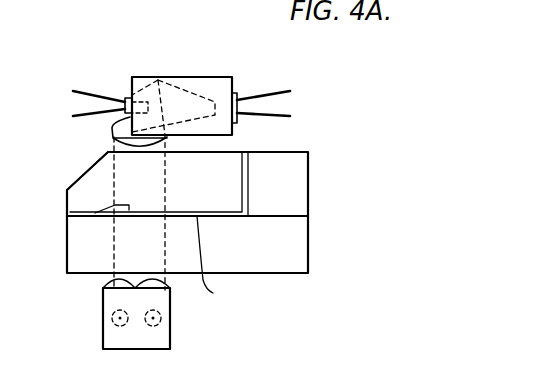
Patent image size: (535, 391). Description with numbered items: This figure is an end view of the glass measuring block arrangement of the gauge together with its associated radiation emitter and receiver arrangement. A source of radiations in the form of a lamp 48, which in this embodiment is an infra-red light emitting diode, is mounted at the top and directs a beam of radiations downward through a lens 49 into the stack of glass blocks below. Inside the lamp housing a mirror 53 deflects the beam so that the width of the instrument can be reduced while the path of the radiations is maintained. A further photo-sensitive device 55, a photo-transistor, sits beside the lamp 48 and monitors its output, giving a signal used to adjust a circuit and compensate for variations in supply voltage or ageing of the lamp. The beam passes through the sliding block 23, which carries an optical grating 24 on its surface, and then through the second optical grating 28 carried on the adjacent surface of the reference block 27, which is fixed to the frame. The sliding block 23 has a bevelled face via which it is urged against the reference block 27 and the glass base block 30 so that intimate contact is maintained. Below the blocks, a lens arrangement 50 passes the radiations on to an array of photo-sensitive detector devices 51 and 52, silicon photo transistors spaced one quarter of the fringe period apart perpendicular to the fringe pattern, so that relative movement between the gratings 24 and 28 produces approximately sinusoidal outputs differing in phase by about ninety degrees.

The sliding glass block 23 is at (93, 196).
The optical grating 24 is at (117, 206).
The reference glass block 27 is at (290, 245).
The second optical grating 28 is at (216, 261).
The glass base block 30 is at (288, 180).
The lamp 48 is at (220, 90).
The lens 49 is at (113, 140).
The lens arrangement 50 is at (122, 285).
The photo-sensitive detector device 51 is at (110, 322).
The photo-sensitive detector device 52 is at (175, 325).
The mirror 53 is at (146, 84).
The further photo-sensitive device 55 is at (128, 97).